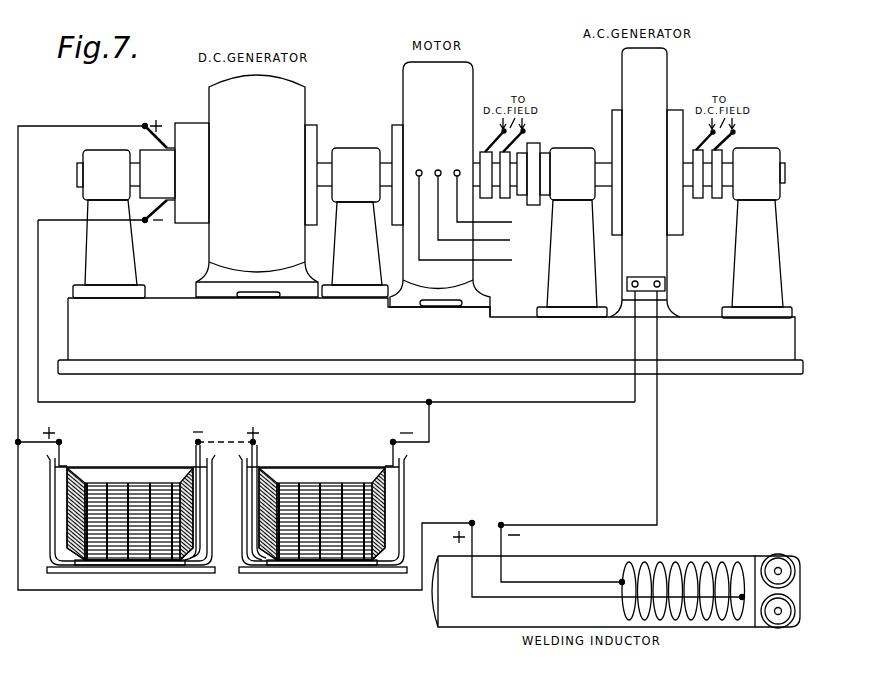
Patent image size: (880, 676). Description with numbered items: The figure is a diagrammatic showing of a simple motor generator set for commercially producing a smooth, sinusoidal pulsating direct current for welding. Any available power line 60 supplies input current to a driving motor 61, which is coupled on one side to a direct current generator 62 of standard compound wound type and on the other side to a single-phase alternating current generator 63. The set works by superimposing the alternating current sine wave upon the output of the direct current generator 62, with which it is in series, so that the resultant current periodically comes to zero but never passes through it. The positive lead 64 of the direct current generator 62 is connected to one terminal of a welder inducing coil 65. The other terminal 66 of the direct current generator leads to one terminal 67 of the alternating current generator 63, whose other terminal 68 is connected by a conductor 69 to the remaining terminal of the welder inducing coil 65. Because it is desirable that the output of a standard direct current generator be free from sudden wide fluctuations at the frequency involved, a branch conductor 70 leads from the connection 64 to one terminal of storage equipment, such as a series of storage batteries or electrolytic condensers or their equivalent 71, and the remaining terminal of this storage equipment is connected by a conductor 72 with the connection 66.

The power line 60 is at (504, 223).
The driving motor 61 is at (473, 82).
The direct current generator 62 is at (290, 98).
The alternating current generator 63 is at (667, 73).
The positive lead 64 is at (30, 208).
The welder inducing coil 65 is at (694, 567).
The other terminal of the D.C. generator 66 is at (133, 402).
The terminal of the A.C. generator 67 is at (630, 285).
The other terminal of the A.C. generator 68 is at (661, 283).
The conductor 69 is at (657, 432).
The branch conductor 70 is at (38, 447).
The storage equipment 71 is at (267, 554).
The conductor 72 is at (433, 422).